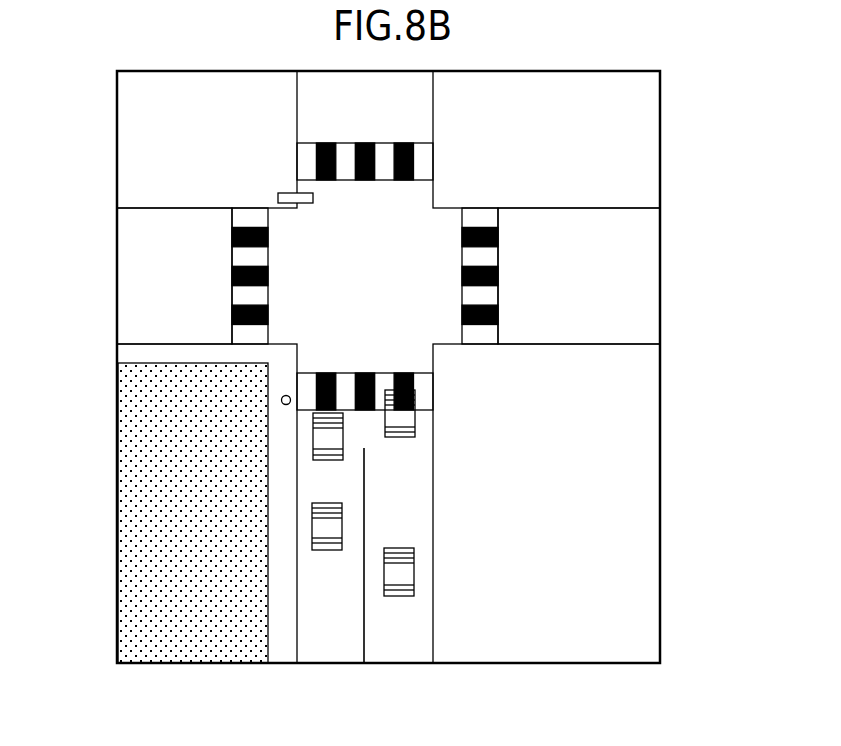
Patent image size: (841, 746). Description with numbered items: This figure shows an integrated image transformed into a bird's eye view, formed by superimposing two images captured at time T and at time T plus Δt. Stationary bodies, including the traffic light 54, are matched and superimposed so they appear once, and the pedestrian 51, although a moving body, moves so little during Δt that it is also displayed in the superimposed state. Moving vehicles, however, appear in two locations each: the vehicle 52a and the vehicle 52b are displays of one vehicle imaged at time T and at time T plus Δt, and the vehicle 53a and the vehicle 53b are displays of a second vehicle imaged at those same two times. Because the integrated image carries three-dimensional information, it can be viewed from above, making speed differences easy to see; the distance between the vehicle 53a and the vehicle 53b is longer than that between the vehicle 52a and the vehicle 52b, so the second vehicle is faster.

The pedestrian 51 is at (281, 400).
The vehicle 52a is at (323, 527).
The vehicle 52b is at (323, 436).
The vehicle 53a is at (407, 413).
The vehicle 53b is at (407, 570).
The traffic light 54 is at (280, 199).